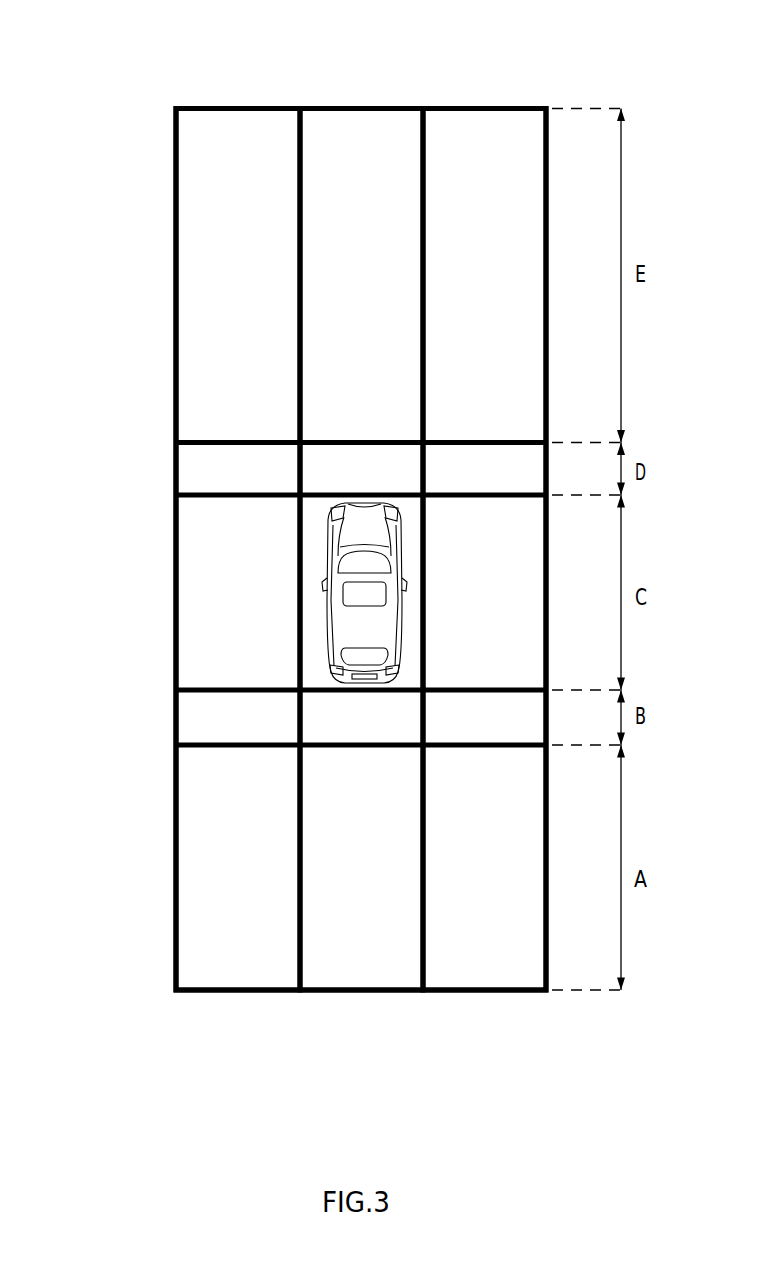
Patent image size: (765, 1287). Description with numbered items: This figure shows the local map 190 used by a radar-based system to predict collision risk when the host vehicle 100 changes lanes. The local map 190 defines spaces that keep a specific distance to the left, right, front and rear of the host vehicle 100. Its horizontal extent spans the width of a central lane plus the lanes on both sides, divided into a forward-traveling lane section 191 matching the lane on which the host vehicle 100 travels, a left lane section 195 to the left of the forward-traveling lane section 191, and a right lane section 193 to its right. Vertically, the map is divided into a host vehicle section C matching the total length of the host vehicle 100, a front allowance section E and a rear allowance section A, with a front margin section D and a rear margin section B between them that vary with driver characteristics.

The local map 190 is at (170, 378).
The left lane section 195 is at (224, 118).
The forward-traveling lane section 191 is at (358, 118).
The right lane section 193 is at (488, 118).
The host vehicle 100 is at (343, 535).